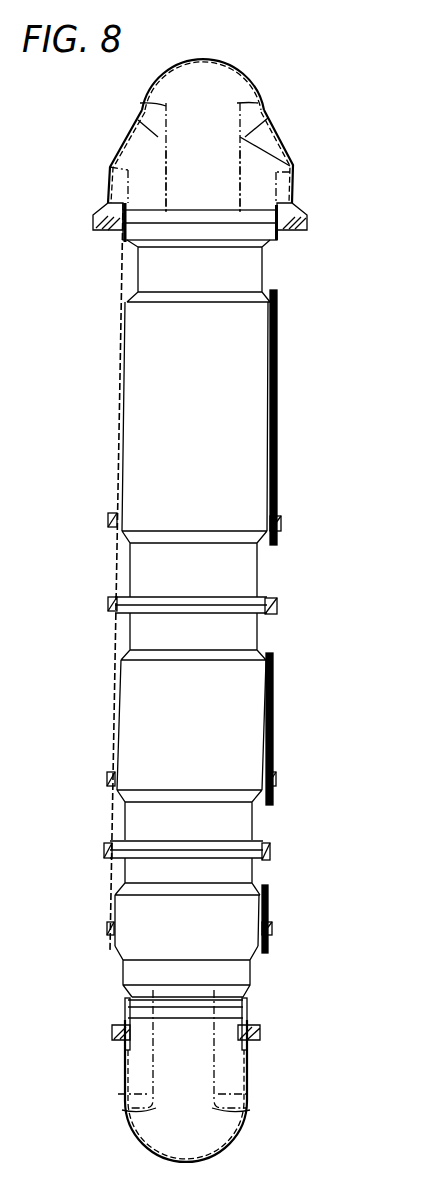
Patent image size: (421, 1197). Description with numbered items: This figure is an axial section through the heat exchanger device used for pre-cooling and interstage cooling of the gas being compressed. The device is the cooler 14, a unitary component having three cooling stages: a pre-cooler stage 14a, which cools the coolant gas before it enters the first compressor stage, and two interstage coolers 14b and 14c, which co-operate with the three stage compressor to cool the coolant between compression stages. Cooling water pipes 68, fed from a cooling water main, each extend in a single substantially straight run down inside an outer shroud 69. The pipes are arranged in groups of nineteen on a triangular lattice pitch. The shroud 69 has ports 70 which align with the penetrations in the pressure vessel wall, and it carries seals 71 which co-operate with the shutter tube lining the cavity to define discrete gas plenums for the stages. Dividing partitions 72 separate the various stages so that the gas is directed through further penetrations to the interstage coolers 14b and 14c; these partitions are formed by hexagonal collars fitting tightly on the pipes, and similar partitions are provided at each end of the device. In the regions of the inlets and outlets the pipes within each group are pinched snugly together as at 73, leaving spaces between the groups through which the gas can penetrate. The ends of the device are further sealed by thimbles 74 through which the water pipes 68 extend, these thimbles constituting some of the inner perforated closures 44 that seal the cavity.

The cooler 14 is at (152, 649).
The pre-cooler stage 14a is at (137, 394).
The interstage cooler 14b is at (133, 723).
The interstage cooler 14c is at (143, 918).
The inner perforated closure 44 is at (243, 65).
The cooling water pipes 68 is at (272, 170).
The outer shroud 69 is at (278, 398).
The ports 70 is at (266, 277).
The seals 71 is at (281, 523).
The dividing partitions 72 is at (152, 603).
The pinched pipe regions 73 is at (254, 560).
The thimbles 74 is at (283, 166).